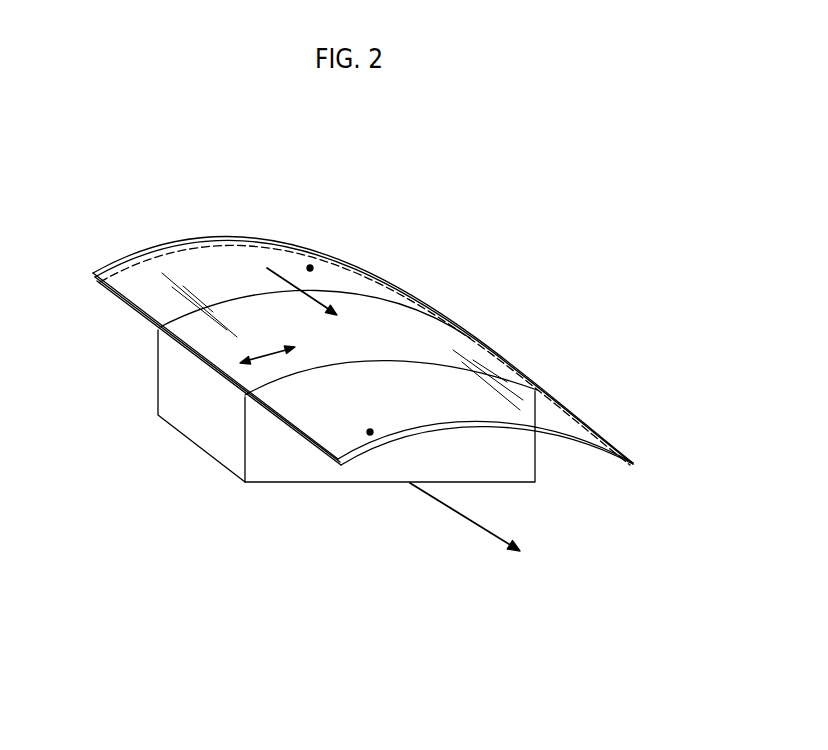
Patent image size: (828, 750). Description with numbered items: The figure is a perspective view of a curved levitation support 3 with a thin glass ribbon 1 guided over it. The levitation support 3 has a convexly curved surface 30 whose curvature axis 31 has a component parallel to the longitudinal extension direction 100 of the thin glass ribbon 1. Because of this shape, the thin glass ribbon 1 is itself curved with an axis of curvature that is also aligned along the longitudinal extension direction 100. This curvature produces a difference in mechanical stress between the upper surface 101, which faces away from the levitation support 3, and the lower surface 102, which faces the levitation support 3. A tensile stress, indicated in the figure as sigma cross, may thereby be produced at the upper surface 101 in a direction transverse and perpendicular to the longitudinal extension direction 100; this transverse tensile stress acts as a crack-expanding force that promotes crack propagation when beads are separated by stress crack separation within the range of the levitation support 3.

The thin glass ribbon 1 is at (95, 270).
The longitudinal extension direction 100 is at (276, 283).
The upper surface 101 is at (310, 268).
The surface 30 is at (352, 270).
The lower surface 102 is at (370, 435).
The curvature axis 31 is at (490, 533).
The levitation support 3 is at (508, 460).